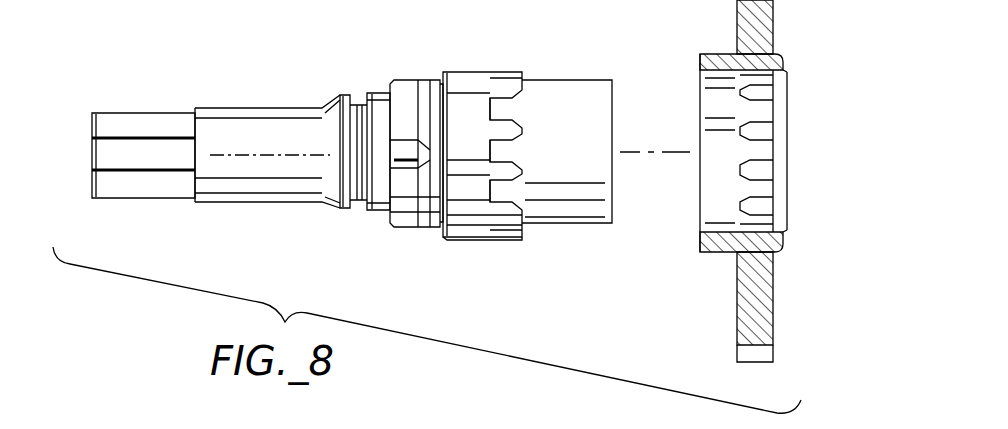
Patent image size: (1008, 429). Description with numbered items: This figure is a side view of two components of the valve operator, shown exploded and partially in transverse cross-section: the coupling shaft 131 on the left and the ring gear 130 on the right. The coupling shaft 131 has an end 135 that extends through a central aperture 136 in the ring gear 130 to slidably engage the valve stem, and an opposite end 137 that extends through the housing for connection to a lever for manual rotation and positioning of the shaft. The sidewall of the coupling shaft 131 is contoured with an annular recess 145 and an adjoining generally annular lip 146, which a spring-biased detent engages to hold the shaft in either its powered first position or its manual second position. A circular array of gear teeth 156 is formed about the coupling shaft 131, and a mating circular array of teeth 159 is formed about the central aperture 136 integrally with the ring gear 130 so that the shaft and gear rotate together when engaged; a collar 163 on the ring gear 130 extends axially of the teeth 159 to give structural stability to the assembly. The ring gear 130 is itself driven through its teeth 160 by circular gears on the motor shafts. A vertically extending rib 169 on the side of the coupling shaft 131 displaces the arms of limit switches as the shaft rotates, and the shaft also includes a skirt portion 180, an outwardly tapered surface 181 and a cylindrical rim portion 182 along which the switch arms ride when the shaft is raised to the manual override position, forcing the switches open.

The coupling shaft 131 is at (132, 58).
The opposite end 137 is at (92, 135).
The annular lip 146 is at (355, 213).
The annular recess 145 is at (367, 212).
The skirt portion 180 is at (405, 228).
The rib 169 is at (407, 150).
The outwardly tapered surface 181 is at (430, 240).
The cylindrical rim portion 182 is at (455, 240).
The gear teeth 156 is at (515, 200).
The end 135 is at (620, 205).
The collar 163 is at (728, 55).
The teeth 159 is at (745, 130).
The central aperture 136 is at (785, 82).
The ring gear 130 is at (737, 325).
The teeth 160 is at (745, 362).